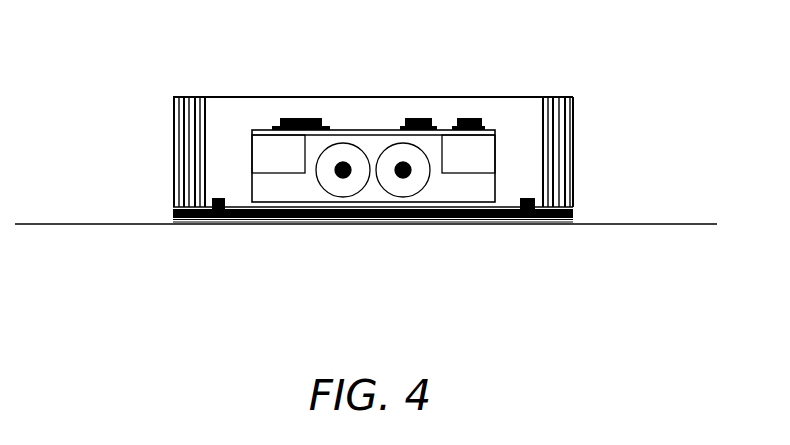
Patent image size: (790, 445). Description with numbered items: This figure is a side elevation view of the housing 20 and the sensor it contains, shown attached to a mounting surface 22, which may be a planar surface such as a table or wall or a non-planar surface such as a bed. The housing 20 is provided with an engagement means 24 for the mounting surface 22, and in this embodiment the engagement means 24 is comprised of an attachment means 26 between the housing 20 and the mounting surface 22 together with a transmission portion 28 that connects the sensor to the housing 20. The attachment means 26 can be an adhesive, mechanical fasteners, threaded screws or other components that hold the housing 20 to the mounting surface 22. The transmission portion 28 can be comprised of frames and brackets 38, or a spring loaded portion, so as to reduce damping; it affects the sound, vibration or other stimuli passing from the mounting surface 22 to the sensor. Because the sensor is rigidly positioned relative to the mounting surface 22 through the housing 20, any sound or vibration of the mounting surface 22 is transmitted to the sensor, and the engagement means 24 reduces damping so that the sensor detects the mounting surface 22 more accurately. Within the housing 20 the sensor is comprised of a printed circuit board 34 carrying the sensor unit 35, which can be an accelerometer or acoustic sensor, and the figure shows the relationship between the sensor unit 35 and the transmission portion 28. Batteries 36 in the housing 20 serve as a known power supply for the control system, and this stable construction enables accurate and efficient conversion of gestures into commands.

The housing 20 is at (178, 93).
The mounting surface 22 is at (673, 228).
The engagement means 24 is at (568, 248).
The attachment means 26 is at (490, 223).
The transmission portion 28 is at (170, 214).
The printed circuit board 34 is at (243, 133).
The sensor unit 35 is at (482, 113).
The batteries 36 is at (323, 176).
The frames and brackets 38 is at (258, 170).